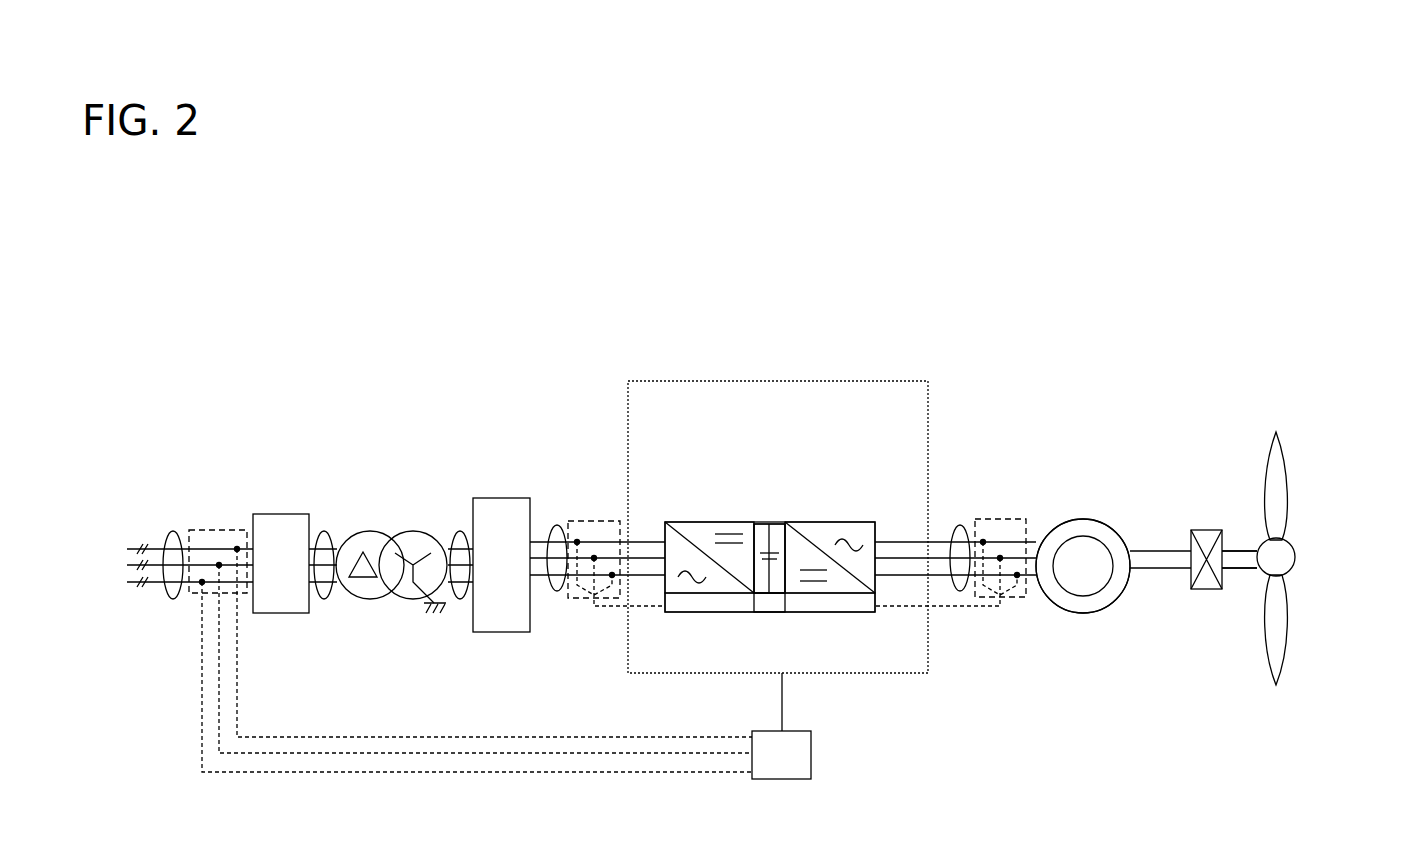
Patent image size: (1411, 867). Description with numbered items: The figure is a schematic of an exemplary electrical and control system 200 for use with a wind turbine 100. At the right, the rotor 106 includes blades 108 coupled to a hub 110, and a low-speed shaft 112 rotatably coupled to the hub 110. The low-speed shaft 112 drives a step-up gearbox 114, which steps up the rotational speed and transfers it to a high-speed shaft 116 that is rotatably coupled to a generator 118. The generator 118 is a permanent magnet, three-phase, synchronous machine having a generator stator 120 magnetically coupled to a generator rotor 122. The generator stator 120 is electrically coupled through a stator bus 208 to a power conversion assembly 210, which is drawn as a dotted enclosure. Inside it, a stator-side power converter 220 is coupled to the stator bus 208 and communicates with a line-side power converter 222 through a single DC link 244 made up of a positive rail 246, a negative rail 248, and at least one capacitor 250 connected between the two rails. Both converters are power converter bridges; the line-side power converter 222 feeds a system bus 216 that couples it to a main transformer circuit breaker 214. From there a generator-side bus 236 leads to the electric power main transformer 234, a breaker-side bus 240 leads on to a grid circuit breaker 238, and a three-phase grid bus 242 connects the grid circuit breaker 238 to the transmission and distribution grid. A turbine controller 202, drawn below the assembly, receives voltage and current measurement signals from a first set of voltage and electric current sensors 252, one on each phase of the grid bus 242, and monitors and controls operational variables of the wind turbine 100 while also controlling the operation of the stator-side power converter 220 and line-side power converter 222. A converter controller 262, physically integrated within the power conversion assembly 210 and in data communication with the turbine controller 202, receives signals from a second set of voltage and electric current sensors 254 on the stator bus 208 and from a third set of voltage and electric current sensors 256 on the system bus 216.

The wind turbine 100 is at (1263, 413).
The rotor 106 is at (1302, 535).
The blades 108 is at (1290, 490).
The hub 110 is at (1296, 558).
The low-speed shaft 112 is at (1237, 551).
The step-up gearbox 114 is at (1203, 530).
The high-speed shaft 116 is at (1160, 551).
The generator 118 is at (1087, 482).
The generator stator 120 is at (1086, 520).
The generator rotor 122 is at (1075, 543).
The electrical and control system 200 is at (226, 395).
The turbine controller 202 is at (781, 726).
The stator bus 208 is at (960, 527).
The power conversion assembly 210 is at (928, 405).
The main transformer circuit breaker 214 is at (502, 498).
The system bus 216 is at (557, 525).
The stator-side power converter 220 is at (877, 588).
The line-side power converter 222 is at (665, 590).
The main transformer 234 is at (413, 530).
The generator-side bus 236 is at (460, 521).
The grid circuit breaker 238 is at (268, 513).
The breaker-side bus 240 is at (325, 530).
The grid bus 242 is at (174, 530).
The DC link 244 is at (752, 480).
The positive rail 246 is at (777, 523).
The negative rail 248 is at (778, 594).
The capacitor 250 is at (762, 552).
The first set of voltage and electric current sensors 252 is at (190, 606).
The second set of voltage and electric current sensors 254 is at (995, 510).
The third set of voltage and electric current sensors 256 is at (587, 520).
The converter controller 262 is at (832, 603).